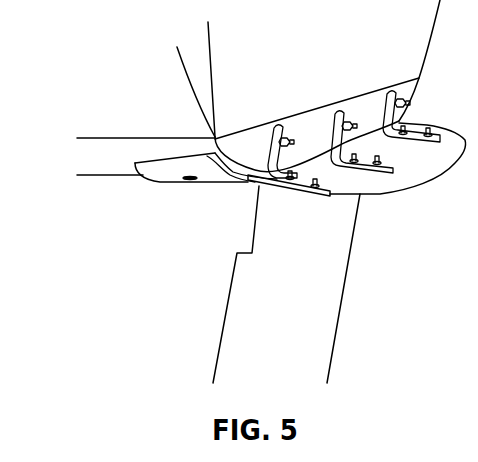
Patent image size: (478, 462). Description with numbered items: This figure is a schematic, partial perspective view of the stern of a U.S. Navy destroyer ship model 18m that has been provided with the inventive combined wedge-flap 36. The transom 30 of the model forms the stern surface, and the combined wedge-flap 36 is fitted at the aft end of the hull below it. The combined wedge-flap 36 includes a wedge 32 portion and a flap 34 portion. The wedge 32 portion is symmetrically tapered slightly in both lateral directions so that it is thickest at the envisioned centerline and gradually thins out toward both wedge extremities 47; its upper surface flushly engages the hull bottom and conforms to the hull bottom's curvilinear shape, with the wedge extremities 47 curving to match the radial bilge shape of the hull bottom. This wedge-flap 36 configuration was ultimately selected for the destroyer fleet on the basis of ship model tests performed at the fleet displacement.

The DDG 51 ship model 18m is at (143, 38).
The transom 30 is at (227, 85).
The wedge portion 32 is at (182, 187).
The flap portion 34 is at (330, 194).
The combined wedge-flap 36 is at (233, 203).
The wedge extremities 47 is at (157, 153).